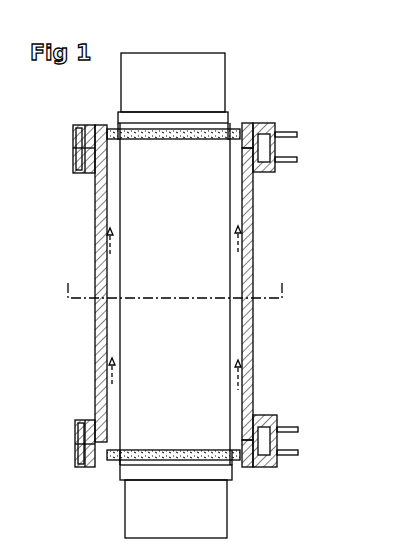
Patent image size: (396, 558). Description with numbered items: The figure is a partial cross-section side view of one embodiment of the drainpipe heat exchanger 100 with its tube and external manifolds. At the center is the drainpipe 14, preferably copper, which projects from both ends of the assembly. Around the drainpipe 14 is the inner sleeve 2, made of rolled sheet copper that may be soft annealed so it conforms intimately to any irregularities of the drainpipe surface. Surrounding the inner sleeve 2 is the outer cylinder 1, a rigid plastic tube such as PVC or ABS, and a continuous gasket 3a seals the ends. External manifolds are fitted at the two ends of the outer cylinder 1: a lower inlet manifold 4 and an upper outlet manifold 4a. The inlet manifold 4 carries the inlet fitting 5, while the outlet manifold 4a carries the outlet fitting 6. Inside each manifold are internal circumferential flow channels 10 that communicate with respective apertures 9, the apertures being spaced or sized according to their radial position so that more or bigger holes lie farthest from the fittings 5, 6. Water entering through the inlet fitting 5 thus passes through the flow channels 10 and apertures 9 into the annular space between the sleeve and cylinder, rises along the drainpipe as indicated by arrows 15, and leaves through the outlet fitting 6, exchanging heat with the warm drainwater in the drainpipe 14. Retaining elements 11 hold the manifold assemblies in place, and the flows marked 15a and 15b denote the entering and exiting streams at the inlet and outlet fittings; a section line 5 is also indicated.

The drainpipe heat exchanger 100 is at (236, 43).
The central drainpipe 14 is at (232, 50).
The inner sleeve 2 is at (226, 111).
The continuous gasket 3a is at (238, 127).
The outer cylinder 1 is at (254, 196).
The apertures 9 is at (84, 146).
The internal circumferential flow channels 10 is at (86, 158).
The fastener 11 is at (80, 125).
The outlet fitting 6 is at (288, 163).
The outlet manifold 4a is at (302, 117).
The inlet manifold 4 is at (290, 410).
The arrows 15 is at (102, 240).
The fluid inlet flow 15a is at (288, 442).
The fluid outlet flow 15b is at (290, 146).
The inlet fitting 5 is at (305, 478).